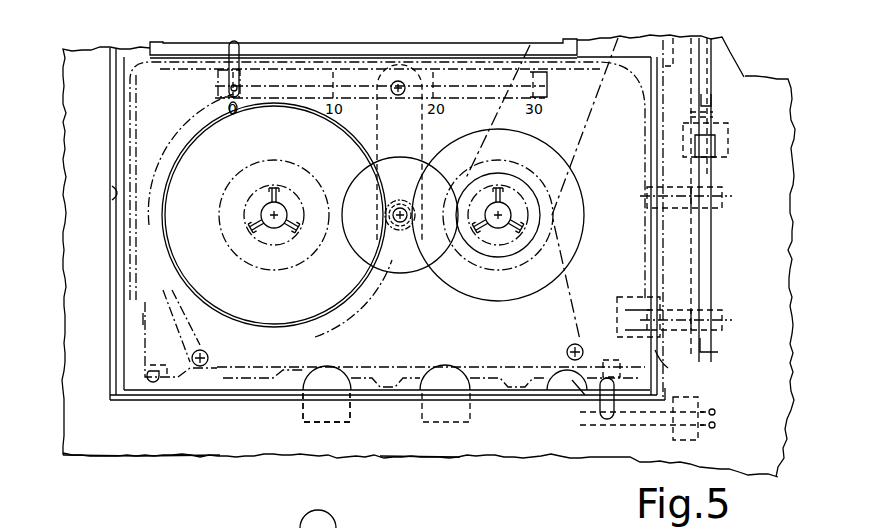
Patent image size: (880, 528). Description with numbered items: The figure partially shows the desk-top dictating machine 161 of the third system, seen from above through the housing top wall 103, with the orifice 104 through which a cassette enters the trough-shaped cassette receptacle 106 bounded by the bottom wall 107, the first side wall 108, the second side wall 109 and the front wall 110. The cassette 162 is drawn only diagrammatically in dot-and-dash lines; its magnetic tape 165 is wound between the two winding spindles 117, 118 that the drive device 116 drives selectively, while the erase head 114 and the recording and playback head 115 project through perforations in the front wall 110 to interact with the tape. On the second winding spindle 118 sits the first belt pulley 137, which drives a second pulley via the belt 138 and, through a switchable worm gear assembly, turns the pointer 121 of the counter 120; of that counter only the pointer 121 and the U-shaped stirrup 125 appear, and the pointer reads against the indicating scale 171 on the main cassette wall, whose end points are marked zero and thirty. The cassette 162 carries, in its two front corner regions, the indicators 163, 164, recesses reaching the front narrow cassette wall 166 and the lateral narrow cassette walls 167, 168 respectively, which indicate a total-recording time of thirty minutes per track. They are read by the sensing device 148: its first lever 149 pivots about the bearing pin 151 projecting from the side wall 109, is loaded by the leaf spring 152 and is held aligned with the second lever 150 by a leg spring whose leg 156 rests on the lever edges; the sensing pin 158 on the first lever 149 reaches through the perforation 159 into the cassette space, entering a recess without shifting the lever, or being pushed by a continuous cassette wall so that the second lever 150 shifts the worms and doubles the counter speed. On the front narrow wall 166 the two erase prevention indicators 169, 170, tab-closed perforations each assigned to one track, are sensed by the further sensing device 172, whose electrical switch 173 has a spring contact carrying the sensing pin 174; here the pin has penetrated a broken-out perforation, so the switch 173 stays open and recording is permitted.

The housing top wall 103 is at (455, 453).
The orifice 104 is at (115, 197).
The cassette receptacle 106 is at (140, 388).
The bottom wall 107 is at (363, 383).
The first side wall 108 is at (118, 140).
The second side wall 109 is at (652, 223).
The front wall 110 is at (240, 393).
The erase head 114 is at (305, 383).
The recording and playback head 115 is at (427, 382).
The drive device 116 is at (404, 275).
The winding spindle 117 is at (274, 228).
The winding spindle 118 is at (498, 228).
The counter 120 is at (254, 48).
The pointer 121 is at (231, 50).
The U-shaped stirrup 125 is at (418, 48).
The first belt pulley 137 is at (500, 170).
The belt 138 is at (607, 73).
The sensing device 148 is at (718, 262).
The first lever 149 is at (690, 115).
The second lever 150 is at (715, 110).
The bearing pin 151 is at (722, 205).
The leaf spring 152 is at (722, 352).
The leg 156 is at (712, 102).
The sensing pin 158 is at (688, 307).
The perforation 159 is at (640, 337).
The desk-top dictating machine 161 is at (205, 458).
The cassette 162 is at (220, 380).
The indicator 163 is at (143, 325).
The indicator 164 is at (660, 360).
The magnetic tape 165 is at (530, 360).
The front narrow cassette wall 166 is at (485, 378).
The lateral narrow cassette wall 167 is at (647, 137).
The lateral narrow cassette wall 168 is at (125, 128).
The erase prevention indicator 169 is at (577, 393).
The erase prevention indicator 170 is at (160, 380).
The indicating scale 171 is at (545, 78).
The sensing device 172 is at (710, 441).
The electrical switch 173 is at (675, 432).
The sensing pin 174 is at (604, 417).